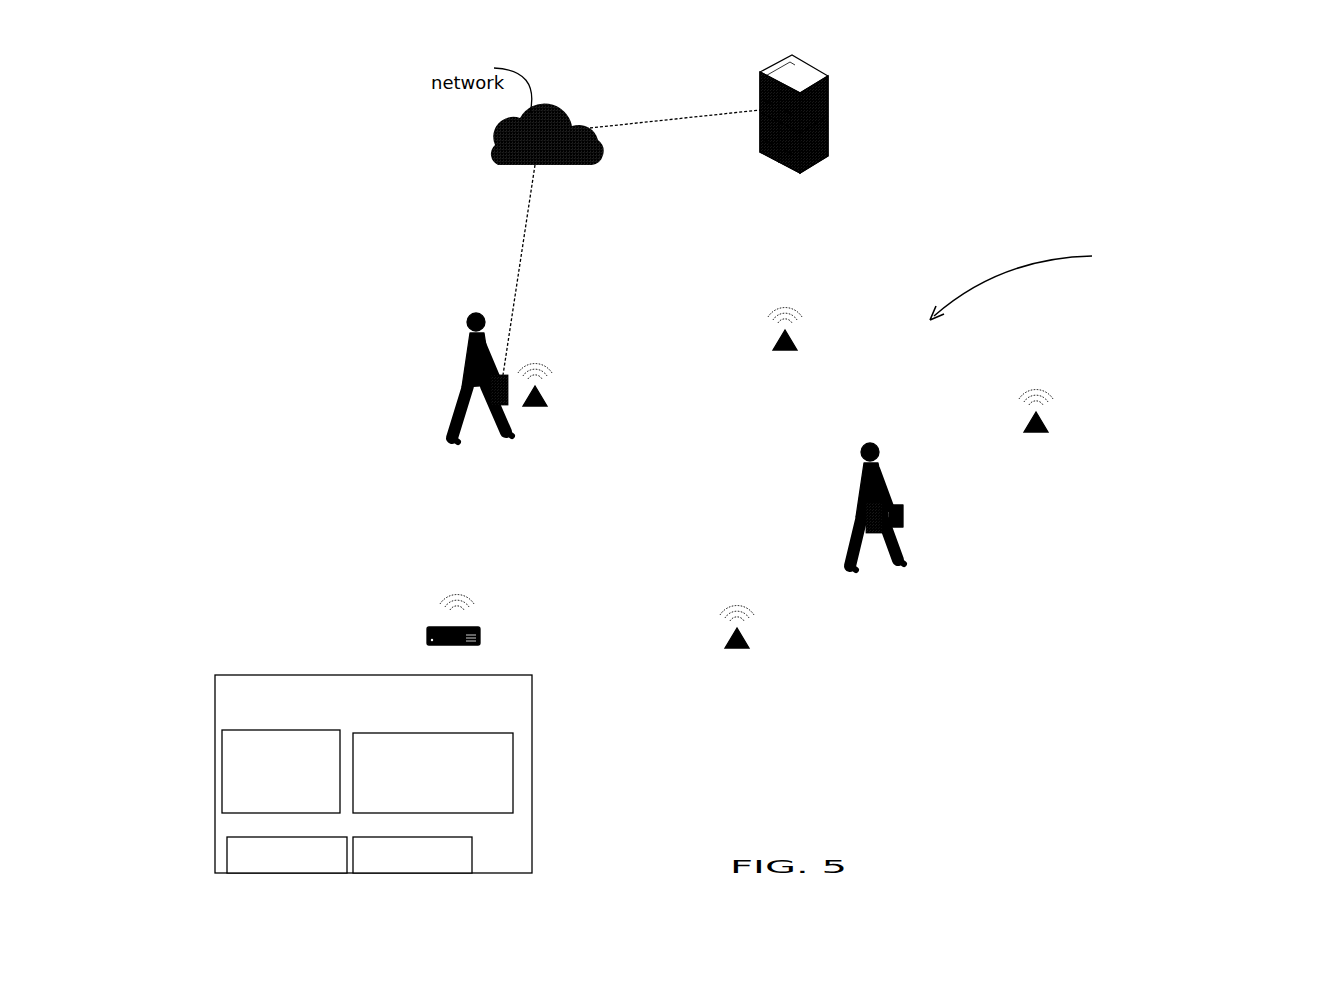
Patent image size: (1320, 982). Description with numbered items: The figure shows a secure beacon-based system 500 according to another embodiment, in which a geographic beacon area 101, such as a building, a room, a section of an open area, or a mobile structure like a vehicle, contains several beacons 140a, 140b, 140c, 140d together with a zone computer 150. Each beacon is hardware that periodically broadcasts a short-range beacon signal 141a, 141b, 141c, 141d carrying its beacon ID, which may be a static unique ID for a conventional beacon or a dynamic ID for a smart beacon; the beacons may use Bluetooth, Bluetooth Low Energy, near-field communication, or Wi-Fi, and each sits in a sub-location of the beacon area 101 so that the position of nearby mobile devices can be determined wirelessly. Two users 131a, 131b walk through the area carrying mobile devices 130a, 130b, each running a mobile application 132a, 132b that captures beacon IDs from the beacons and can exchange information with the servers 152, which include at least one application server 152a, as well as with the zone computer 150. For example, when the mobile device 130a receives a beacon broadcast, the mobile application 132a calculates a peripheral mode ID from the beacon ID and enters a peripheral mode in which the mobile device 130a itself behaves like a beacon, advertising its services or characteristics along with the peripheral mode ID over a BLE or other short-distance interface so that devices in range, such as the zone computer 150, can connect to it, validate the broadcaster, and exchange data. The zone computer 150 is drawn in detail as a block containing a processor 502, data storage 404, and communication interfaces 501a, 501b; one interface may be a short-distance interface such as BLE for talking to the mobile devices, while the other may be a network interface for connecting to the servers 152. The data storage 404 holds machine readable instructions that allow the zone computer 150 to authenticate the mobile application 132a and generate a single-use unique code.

The secure beacon-based system 500 is at (978, 118).
The beacon area 101 is at (1091, 286).
The servers 152 is at (775, 160).
The application server 152a is at (775, 66).
The user 131a is at (478, 316).
The user 131b is at (870, 442).
The mobile device 130a is at (478, 418).
The mobile device 130b is at (856, 526).
The mobile application 132a is at (504, 420).
The mobile application 132b is at (905, 530).
The beacon 140a is at (546, 400).
The beacon 140b is at (794, 340).
The beacon 140c is at (1048, 430).
The beacon 140d is at (748, 640).
The beacon signal 141a is at (540, 350).
The beacon signal 141b is at (788, 298).
The beacon signal 141c is at (1042, 390).
The beacon signal 141d is at (755, 610).
The zone computer 150 is at (373, 720).
The processor 502 is at (281, 771).
The data storage 404 is at (433, 773).
The communication interface 501a is at (287, 855).
The communication interface 501b is at (412, 855).